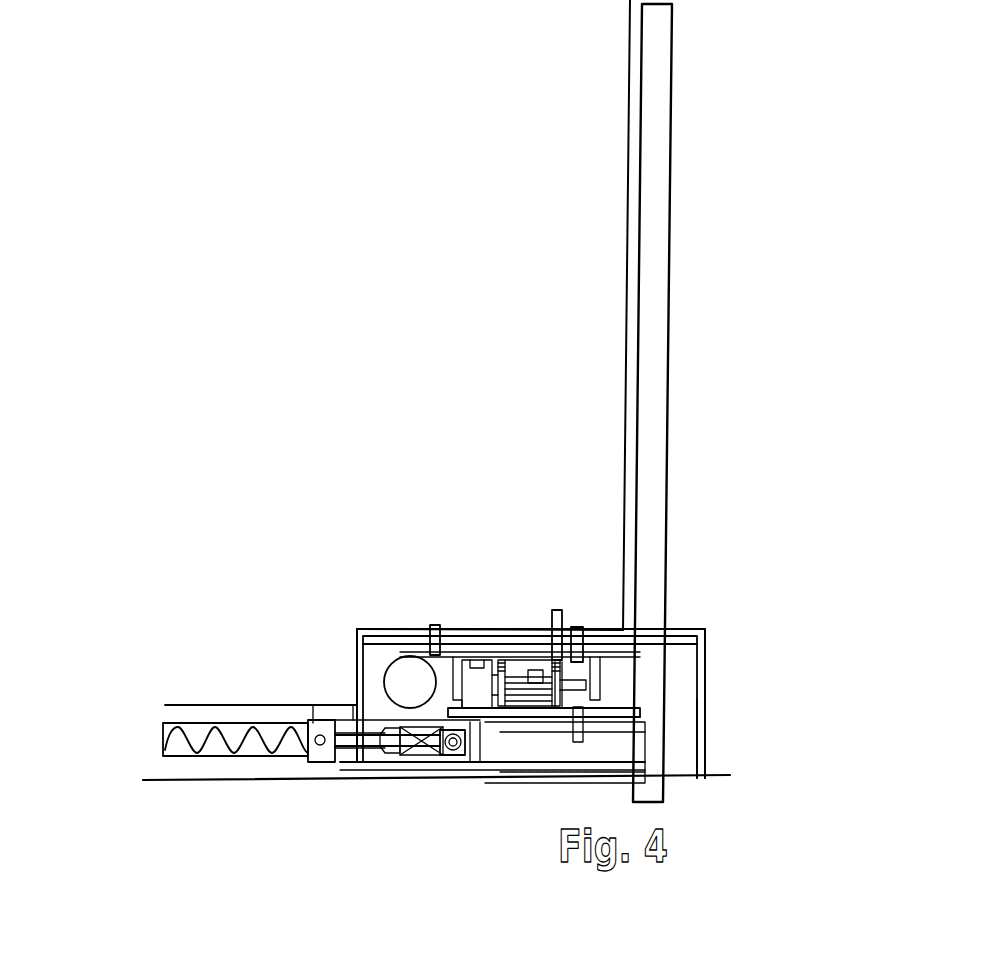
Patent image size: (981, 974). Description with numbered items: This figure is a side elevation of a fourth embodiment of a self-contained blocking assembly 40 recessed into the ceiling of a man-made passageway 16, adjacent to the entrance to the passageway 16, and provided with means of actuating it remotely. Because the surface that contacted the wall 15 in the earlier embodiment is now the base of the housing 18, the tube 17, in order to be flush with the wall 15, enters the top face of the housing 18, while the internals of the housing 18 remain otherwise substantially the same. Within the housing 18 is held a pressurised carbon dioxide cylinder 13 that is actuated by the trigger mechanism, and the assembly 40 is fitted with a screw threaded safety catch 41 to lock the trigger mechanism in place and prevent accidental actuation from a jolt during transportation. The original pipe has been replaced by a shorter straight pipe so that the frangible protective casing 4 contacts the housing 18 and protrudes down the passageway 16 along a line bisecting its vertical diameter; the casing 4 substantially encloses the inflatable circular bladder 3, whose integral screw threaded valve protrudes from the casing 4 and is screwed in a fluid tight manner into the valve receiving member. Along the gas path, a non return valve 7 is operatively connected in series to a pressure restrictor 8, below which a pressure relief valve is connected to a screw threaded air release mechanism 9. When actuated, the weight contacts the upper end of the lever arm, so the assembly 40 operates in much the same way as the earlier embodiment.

The inflatable circular bladder 3 is at (265, 730).
The frangible protective casing 4 is at (240, 722).
The non return valve 7 is at (425, 752).
The pressure restrictor 8 is at (372, 737).
The screwthreaded air release mechanism 9 is at (315, 722).
The pressurised carbon dioxide cylinder 13 is at (410, 662).
The wall 15 is at (627, 275).
The passageway 16 is at (146, 745).
The tube 17 is at (668, 402).
The housing 18 is at (705, 720).
The self-contained blocking assembly 40 is at (464, 474).
The safety catch 41 is at (552, 618).